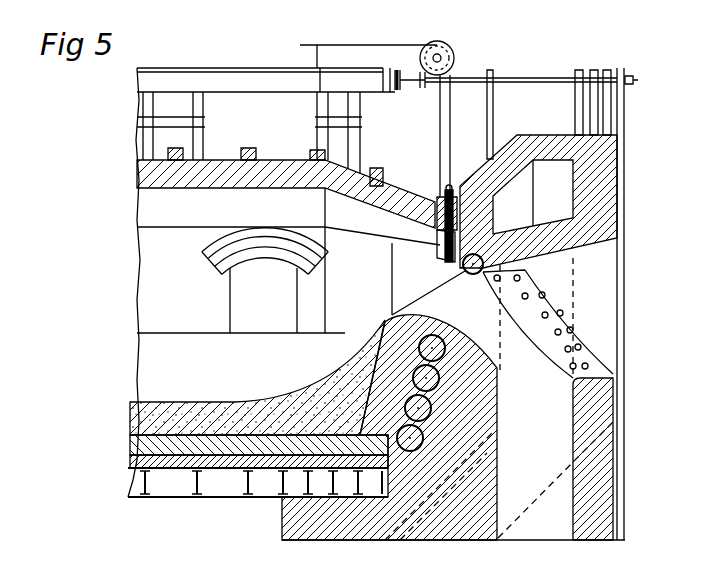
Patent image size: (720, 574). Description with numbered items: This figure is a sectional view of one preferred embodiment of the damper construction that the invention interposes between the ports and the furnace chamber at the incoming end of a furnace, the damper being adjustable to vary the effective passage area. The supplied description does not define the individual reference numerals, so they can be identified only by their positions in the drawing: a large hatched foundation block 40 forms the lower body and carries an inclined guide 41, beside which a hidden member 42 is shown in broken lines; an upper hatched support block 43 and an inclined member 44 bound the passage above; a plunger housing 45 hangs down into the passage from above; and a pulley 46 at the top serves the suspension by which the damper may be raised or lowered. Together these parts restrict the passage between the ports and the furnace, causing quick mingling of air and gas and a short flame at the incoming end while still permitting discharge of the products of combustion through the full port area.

The foundation block 40 is at (552, 442).
The guide surface 41 is at (428, 293).
The hidden channel 42 is at (568, 272).
The hatched support block 43 is at (548, 213).
The inclined member 44 is at (440, 244).
The plunger housing 45 is at (437, 200).
The pulley 46 is at (450, 72).